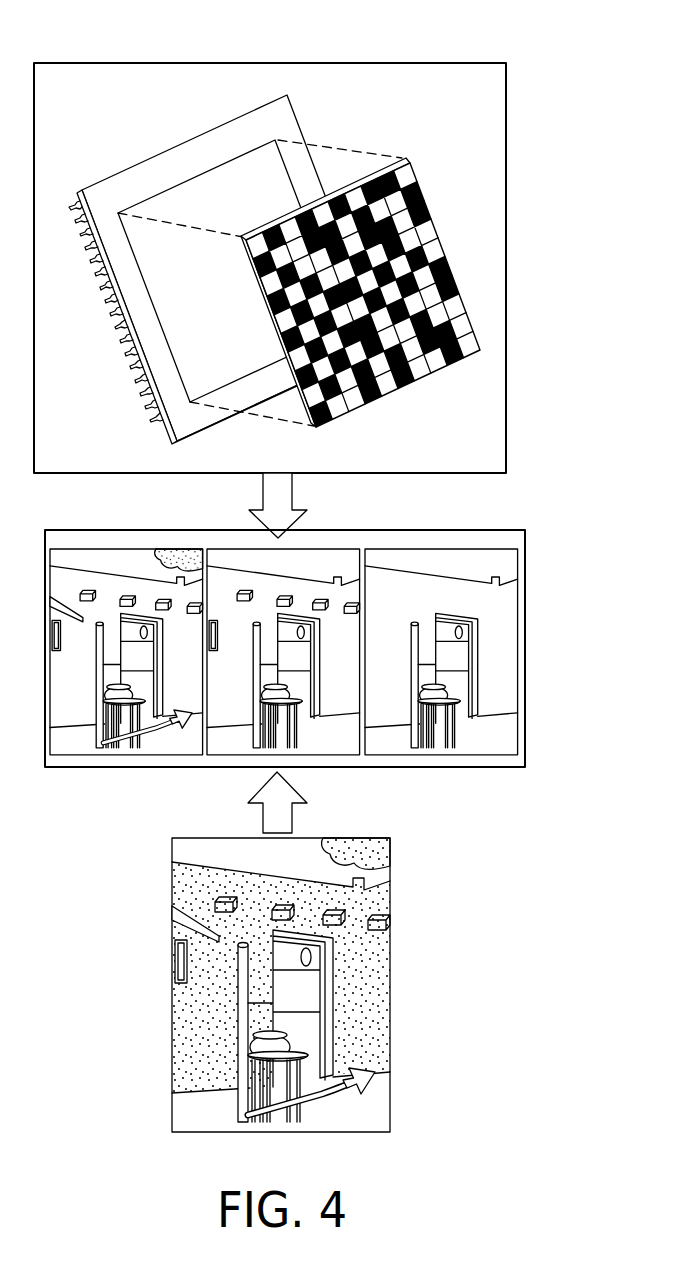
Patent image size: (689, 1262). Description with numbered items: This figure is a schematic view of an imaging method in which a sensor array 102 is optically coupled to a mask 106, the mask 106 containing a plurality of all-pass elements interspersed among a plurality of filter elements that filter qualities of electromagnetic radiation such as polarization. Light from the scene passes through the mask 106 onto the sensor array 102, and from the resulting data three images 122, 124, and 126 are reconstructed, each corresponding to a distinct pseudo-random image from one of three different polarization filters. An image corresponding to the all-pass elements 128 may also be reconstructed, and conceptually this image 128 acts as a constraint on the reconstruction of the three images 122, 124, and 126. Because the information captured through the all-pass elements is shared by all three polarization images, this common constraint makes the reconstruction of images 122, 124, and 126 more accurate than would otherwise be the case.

The sensor array 102 is at (282, 120).
The mask 106 is at (441, 178).
The image 122 is at (72, 767).
The image 124 is at (328, 549).
The image 126 is at (470, 767).
The image corresponding to the all-pass elements 128 is at (367, 990).